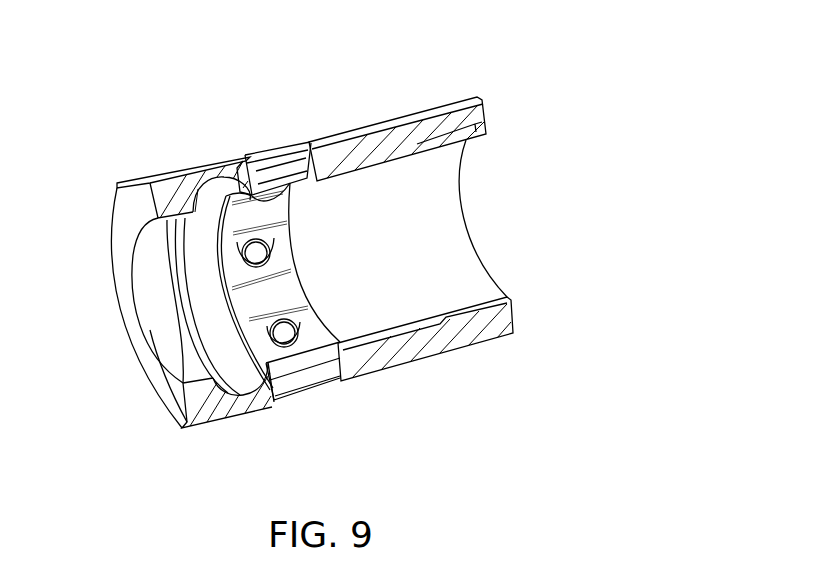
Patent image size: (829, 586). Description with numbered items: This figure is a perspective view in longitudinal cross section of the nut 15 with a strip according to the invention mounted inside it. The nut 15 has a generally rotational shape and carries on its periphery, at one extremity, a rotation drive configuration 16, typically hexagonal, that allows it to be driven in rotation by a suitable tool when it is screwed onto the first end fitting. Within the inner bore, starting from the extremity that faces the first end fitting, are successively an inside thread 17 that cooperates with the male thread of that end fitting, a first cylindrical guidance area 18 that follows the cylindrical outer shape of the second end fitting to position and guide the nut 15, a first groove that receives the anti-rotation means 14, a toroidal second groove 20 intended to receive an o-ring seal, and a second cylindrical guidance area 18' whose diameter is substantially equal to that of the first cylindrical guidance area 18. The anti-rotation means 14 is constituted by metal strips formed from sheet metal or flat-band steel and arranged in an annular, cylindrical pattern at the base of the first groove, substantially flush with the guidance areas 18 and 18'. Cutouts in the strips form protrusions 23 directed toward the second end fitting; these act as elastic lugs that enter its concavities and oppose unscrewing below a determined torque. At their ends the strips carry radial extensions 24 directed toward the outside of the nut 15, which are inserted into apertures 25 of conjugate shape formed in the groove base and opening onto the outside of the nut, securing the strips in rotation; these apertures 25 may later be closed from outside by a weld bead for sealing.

The anti-rotation means 14 is at (278, 298).
The nut 15 is at (397, 130).
The rotation drive configuration 16 is at (150, 168).
The inside thread 17 is at (478, 136).
The first cylindrical guidance area 18 is at (492, 272).
The second cylindrical guidance area 18' is at (108, 306).
The second groove 20 is at (250, 368).
The protrusions 23 is at (283, 335).
The radial extensions 24 is at (300, 158).
The apertures 25 is at (254, 140).